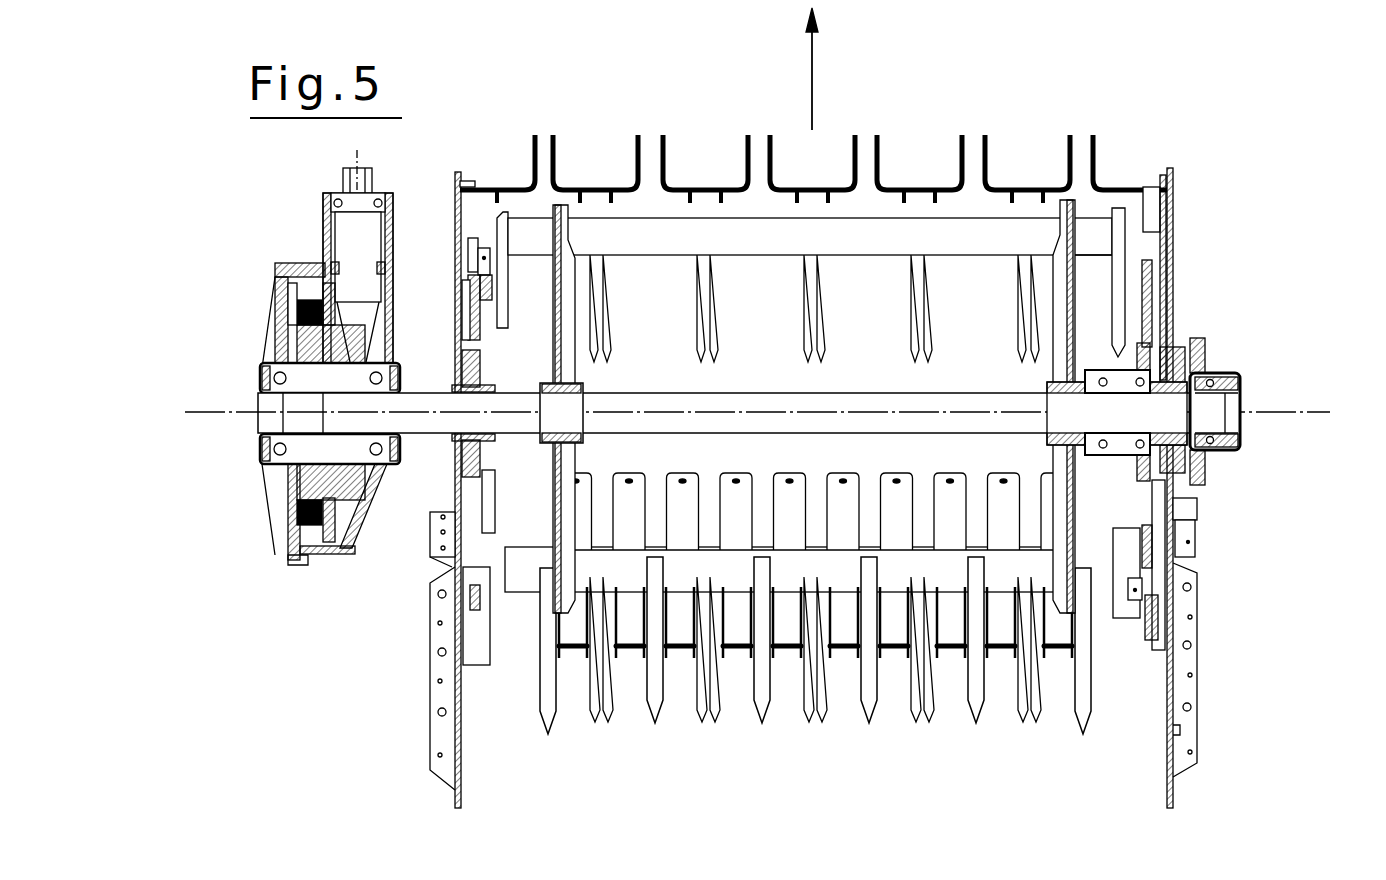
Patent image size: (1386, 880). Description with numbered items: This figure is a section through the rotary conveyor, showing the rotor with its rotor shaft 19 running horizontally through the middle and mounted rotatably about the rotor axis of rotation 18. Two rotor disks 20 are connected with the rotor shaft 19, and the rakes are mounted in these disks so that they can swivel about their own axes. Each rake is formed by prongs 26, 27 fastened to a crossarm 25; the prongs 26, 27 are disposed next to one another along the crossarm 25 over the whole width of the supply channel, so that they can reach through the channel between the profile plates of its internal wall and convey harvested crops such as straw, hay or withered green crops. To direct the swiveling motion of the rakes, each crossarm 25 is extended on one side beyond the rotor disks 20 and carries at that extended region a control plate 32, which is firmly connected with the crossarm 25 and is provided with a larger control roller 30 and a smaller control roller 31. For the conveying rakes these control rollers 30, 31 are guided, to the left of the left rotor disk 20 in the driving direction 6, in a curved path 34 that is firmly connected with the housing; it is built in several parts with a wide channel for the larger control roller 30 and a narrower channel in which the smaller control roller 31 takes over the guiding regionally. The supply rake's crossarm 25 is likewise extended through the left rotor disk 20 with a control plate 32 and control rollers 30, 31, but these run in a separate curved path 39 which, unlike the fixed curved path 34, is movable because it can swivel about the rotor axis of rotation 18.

The driving direction 6 is at (812, 72).
The rotor axis of rotation 18 is at (1240, 412).
The rotor shaft 19 is at (820, 388).
The rotor disks 20 is at (556, 300).
The crossarms 25 is at (806, 250).
The prongs 26 is at (932, 293).
The prongs 27 is at (1077, 713).
The control roller 30 is at (470, 306).
The control roller 31 is at (478, 236).
The control plates 32 is at (498, 225).
The curved path 34 is at (475, 487).
The curved path 39 is at (1192, 497).